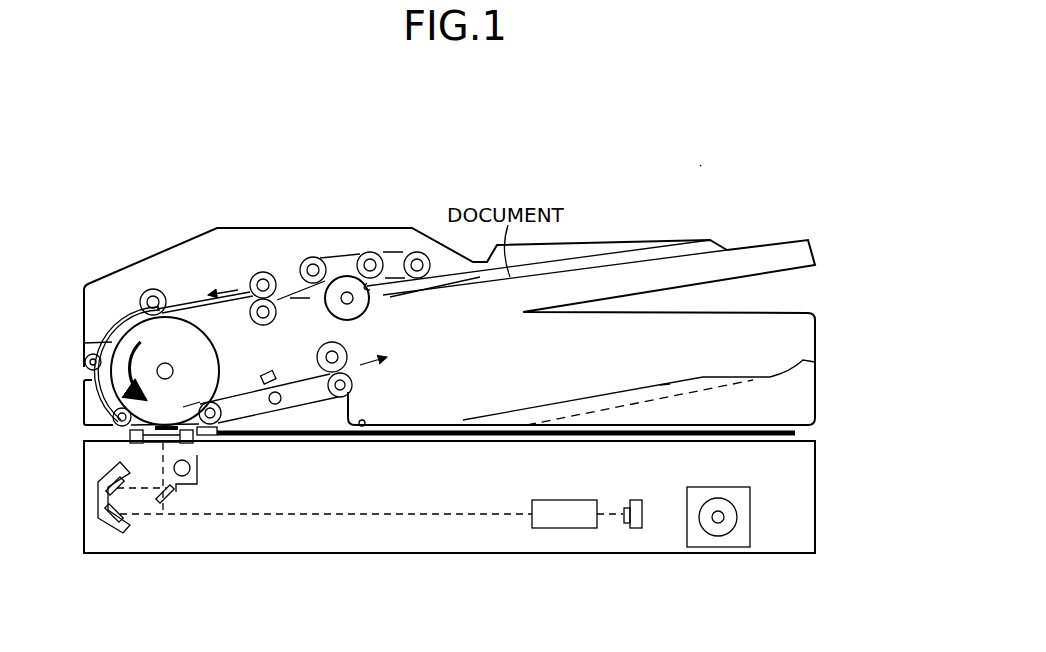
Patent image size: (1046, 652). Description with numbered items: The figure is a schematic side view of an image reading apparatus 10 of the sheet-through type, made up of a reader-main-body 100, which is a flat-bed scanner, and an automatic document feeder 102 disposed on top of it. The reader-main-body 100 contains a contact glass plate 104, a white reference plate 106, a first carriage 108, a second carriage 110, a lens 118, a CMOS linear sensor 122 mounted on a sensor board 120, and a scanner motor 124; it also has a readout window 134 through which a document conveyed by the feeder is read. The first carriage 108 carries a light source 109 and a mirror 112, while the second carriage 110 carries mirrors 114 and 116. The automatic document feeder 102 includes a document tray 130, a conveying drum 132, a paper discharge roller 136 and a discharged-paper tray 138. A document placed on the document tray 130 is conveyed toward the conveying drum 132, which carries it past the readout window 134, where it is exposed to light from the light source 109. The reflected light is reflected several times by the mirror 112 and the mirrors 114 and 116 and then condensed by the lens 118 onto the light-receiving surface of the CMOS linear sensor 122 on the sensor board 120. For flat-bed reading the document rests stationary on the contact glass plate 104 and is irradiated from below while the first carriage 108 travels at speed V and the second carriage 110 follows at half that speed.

The image reading apparatus 10 is at (703, 163).
The reader-main-body 100 is at (820, 520).
The automatic document feeder 102 is at (820, 396).
The contact glass plate 104 is at (770, 447).
The white reference plate 106 is at (203, 435).
The first carriage 108 is at (184, 485).
The light source 109 is at (186, 487).
The second carriage 110 is at (98, 495).
The mirror 112 is at (170, 503).
The mirror 114 is at (108, 476).
The mirror 116 is at (110, 532).
The lens 118 is at (548, 530).
The sensor board 120 is at (636, 530).
The CMOS linear sensor 122 is at (627, 525).
The scanner motor 124 is at (713, 548).
The document tray 130 is at (775, 252).
The conveying drum 132 is at (110, 343).
The readout window 134 is at (150, 443).
The paper discharge roller 136 is at (339, 337).
The discharged-paper tray 138 is at (668, 383).